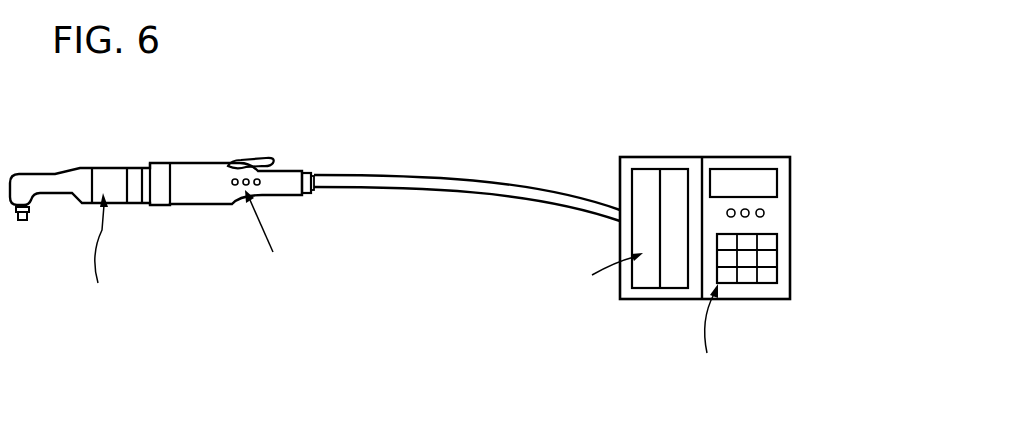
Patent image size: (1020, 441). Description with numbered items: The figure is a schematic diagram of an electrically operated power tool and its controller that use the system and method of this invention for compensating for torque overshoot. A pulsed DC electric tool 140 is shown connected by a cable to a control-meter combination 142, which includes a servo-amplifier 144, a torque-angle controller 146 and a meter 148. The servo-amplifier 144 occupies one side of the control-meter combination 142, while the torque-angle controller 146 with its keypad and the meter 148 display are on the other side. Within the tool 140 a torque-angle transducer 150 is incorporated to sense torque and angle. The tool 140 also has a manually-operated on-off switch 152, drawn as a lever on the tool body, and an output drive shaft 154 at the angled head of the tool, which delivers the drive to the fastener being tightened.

The pulsed DC electric tool 140 is at (14, 173).
The control-meter combination 142 is at (634, 156).
The servo-amplifier 144 is at (647, 270).
The torque-angle controller 146 is at (770, 260).
The meter 148 is at (754, 183).
The torque-angle transducer 150 is at (120, 194).
The manually-operated on-off switch 152 is at (264, 158).
The output drive shaft 154 is at (20, 222).